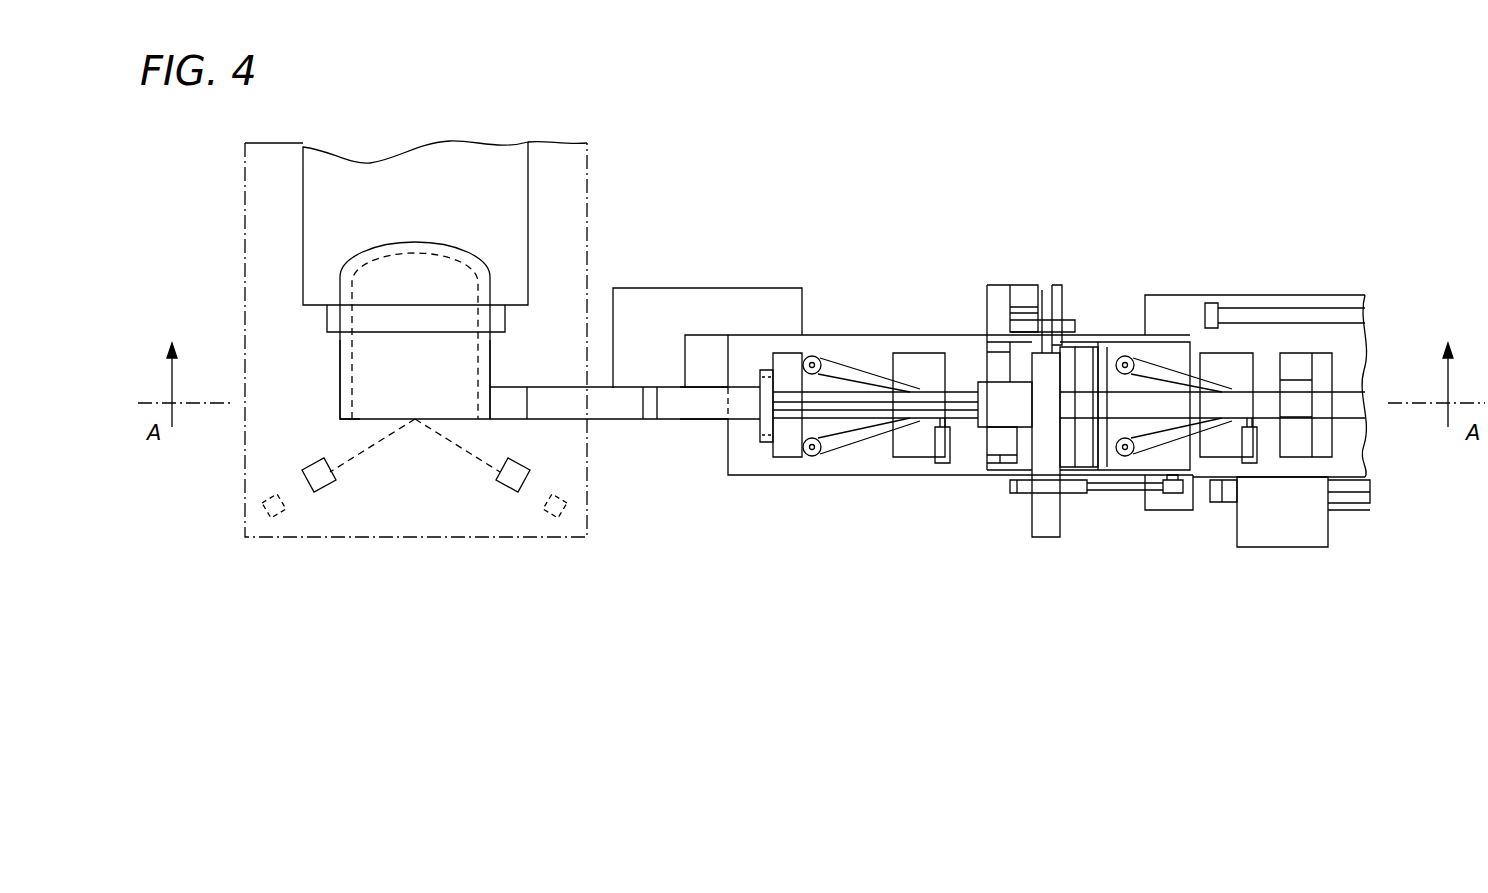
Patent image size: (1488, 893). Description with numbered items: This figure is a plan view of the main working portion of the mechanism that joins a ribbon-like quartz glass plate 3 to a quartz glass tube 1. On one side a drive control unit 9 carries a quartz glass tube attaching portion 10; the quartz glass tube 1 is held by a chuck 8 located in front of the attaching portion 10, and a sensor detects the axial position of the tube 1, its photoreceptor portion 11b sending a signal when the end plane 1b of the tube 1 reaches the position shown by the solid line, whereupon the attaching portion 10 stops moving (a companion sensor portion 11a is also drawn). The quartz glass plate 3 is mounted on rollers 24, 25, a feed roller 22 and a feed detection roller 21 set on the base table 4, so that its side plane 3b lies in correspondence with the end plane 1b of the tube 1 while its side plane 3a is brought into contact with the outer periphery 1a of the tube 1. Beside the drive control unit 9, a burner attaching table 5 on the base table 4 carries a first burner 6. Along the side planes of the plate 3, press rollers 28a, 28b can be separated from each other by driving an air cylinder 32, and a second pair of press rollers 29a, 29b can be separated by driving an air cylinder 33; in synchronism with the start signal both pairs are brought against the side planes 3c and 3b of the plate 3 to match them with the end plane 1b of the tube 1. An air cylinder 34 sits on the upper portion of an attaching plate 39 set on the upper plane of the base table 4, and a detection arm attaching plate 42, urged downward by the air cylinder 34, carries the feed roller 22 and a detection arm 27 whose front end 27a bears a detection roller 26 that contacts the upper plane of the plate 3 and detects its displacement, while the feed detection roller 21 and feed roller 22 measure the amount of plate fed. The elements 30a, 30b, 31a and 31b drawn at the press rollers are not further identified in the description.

The quartz glass tube 1 is at (490, 355).
The outer periphery of the quartz glass tube 1a is at (490, 380).
The end plane of the quartz glass tube 1b is at (343, 420).
The quartz glass plate 3 is at (503, 408).
The side plane of the quartz glass plate 3a is at (477, 403).
The side plane of the quartz glass plate 3b is at (695, 425).
The side plane of the quartz glass plate 3c is at (702, 395).
The base table 4 is at (755, 475).
The burner attaching table 5 is at (748, 305).
The first burner 6 is at (617, 415).
The chuck 8 is at (330, 335).
The drive control unit 9 is at (590, 168).
The quartz glass tube attaching portion 10 is at (427, 212).
The first sensor 11a is at (320, 493).
The photoreceptor portion 11b is at (505, 487).
The feed detection roller 21 is at (1000, 453).
The feed roller 22 is at (1090, 455).
The roller 24 is at (790, 457).
The roller 25 is at (1293, 380).
The detection roller 26 is at (758, 430).
The detection arm 27 is at (888, 400).
The rod end 27a is at (757, 383).
The press roller 28a is at (820, 355).
The press roller 28b is at (822, 458).
The press roller 29a is at (1122, 355).
The press roller 29b is at (1128, 458).
The first link arm 30a is at (845, 383).
The second link arm 30b is at (868, 455).
The third link arm 31a is at (1157, 355).
The fourth link arm 31b is at (1188, 455).
The air cylinder 32 is at (940, 465).
The air cylinder 33 is at (1262, 462).
The air cylinder 34 is at (1047, 430).
The attaching plate 39 is at (1105, 345).
The detection arm attaching plate 42 is at (980, 388).